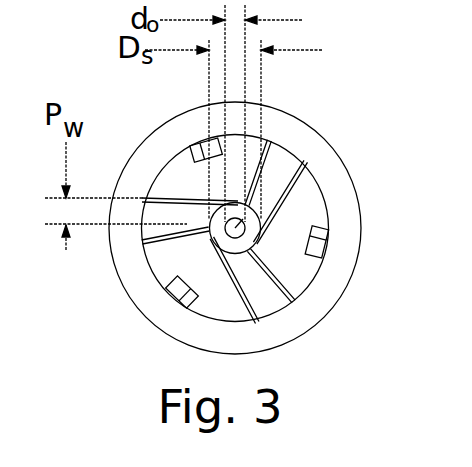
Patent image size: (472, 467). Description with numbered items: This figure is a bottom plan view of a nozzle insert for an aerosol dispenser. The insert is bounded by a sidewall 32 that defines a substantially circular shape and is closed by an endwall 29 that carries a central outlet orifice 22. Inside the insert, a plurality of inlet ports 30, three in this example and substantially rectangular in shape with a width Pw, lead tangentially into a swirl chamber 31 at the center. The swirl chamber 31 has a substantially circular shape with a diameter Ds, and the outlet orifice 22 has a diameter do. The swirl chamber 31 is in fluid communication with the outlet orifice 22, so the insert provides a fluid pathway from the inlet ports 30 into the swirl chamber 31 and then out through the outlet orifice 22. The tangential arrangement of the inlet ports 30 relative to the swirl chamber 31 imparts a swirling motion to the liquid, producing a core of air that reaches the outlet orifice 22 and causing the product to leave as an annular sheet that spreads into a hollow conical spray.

The outlet orifice 22 is at (262, 200).
The endwall 29 is at (307, 247).
The inlet ports 30 is at (255, 170).
The swirl chamber 31 is at (206, 242).
The sidewall 32 is at (340, 232).